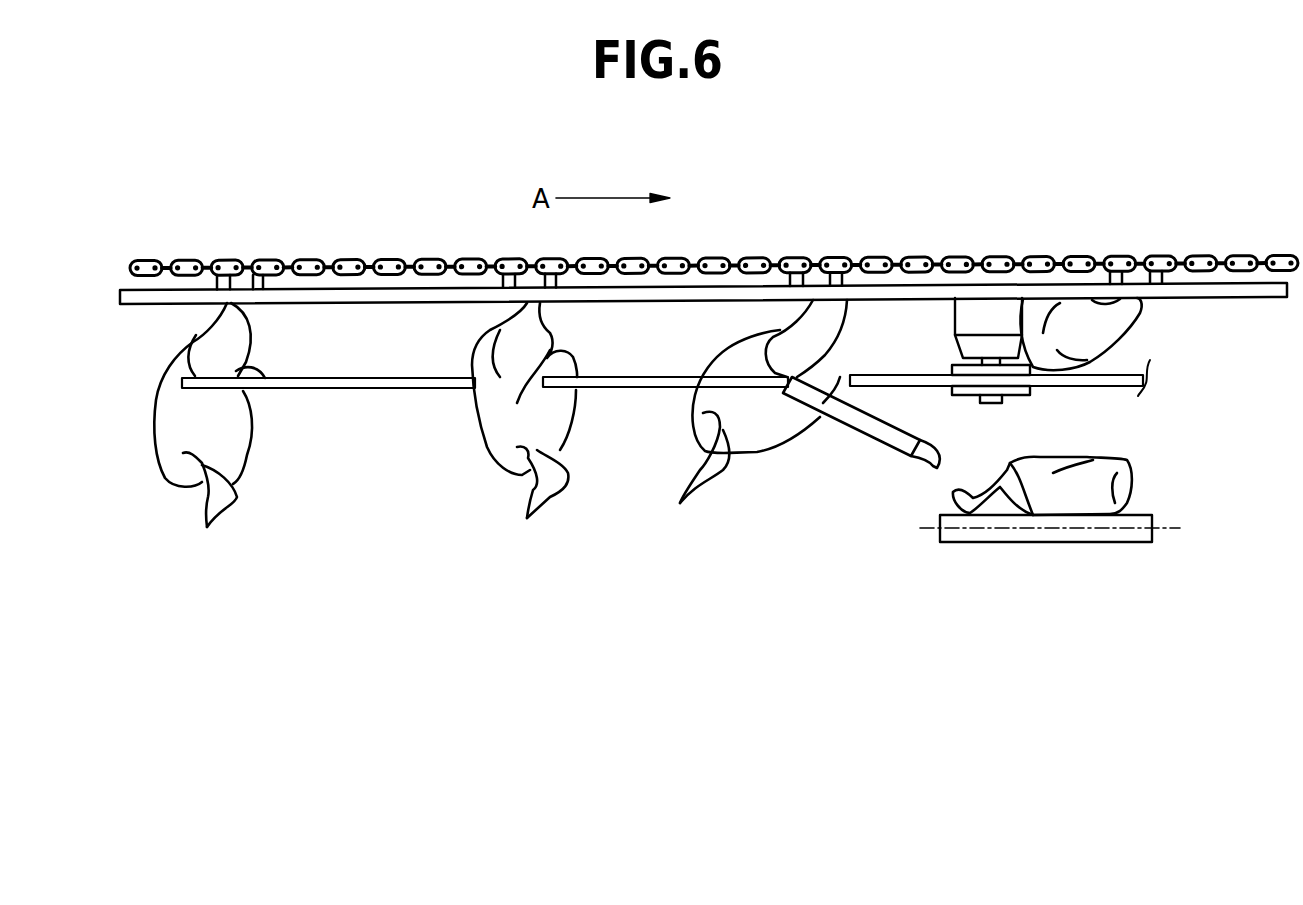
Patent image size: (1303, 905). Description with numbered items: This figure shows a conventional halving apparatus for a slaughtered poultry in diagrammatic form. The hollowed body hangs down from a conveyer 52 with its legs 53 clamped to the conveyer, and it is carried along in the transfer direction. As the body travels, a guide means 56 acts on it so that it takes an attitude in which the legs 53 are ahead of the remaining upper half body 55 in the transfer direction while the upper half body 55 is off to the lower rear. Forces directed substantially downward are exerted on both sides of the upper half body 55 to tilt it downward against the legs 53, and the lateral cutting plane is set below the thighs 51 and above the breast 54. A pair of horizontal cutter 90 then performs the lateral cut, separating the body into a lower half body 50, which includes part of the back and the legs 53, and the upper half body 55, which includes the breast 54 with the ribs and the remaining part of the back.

The lower half body 50 is at (1152, 323).
The thighs 51 is at (805, 328).
The conveyer 52 is at (394, 220).
The legs 53 is at (246, 289).
The breast 54 is at (757, 450).
The upper half body 55 is at (1160, 490).
The guide means 56 is at (865, 440).
The horizontal cutter 90 is at (883, 370).